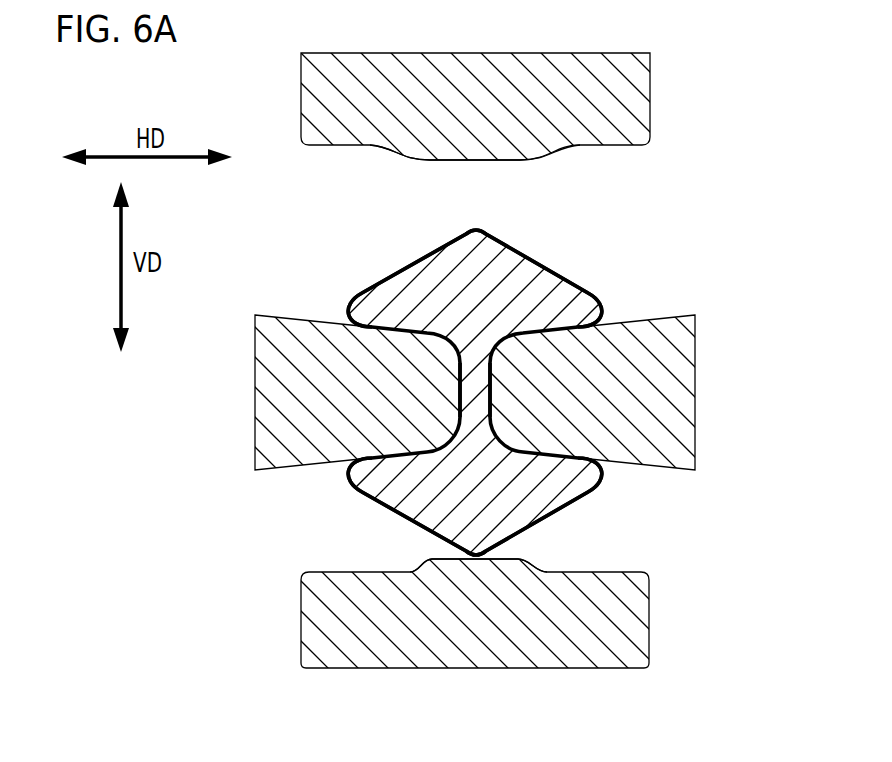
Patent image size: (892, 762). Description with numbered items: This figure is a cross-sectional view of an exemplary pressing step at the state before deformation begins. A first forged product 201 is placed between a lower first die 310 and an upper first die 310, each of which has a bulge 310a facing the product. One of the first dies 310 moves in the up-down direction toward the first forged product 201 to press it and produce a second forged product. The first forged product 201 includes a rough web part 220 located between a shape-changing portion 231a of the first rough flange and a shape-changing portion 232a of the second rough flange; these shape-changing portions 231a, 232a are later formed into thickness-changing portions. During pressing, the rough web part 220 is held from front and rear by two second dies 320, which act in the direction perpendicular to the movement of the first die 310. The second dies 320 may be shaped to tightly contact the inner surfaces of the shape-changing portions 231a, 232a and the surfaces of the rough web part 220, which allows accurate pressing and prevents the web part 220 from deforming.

The first forged product 201 is at (603, 282).
The rough web part 220 is at (472, 392).
The shape-changing portion 231a is at (513, 262).
The shape-changing portion 232a is at (512, 520).
The first die 310 is at (636, 93).
The bulge 310a is at (387, 153).
The second die 320 is at (260, 395).